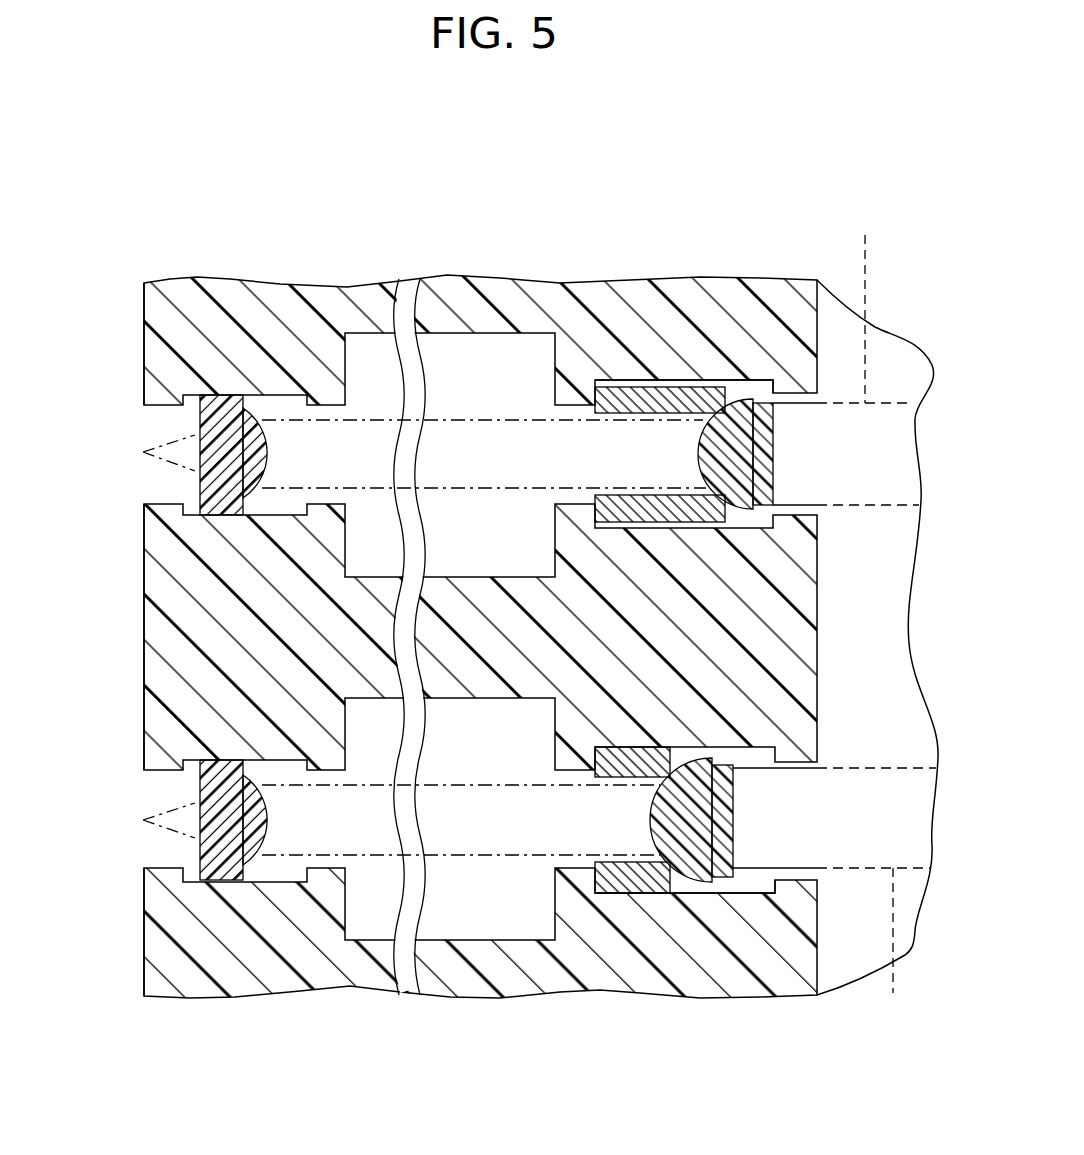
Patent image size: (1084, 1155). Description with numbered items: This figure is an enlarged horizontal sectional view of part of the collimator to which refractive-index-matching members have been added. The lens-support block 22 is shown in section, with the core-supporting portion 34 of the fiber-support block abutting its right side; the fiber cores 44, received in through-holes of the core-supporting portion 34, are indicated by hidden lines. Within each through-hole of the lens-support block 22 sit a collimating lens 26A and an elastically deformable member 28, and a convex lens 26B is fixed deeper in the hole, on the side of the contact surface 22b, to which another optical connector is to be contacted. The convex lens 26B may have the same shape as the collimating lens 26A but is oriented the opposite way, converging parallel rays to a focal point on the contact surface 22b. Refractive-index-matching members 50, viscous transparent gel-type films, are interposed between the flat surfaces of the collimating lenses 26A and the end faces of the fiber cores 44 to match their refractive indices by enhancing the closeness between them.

The lens-support block 22 is at (455, 975).
The contact surface 22b is at (143, 662).
The collimating lens 26A is at (742, 425).
The convex lens 26B is at (218, 427).
The elastically deformable member 28 is at (622, 380).
The core-supporting portion 34 is at (835, 942).
The fiber core 44 is at (876, 616).
The refractive-index-matching member 50 is at (757, 395).